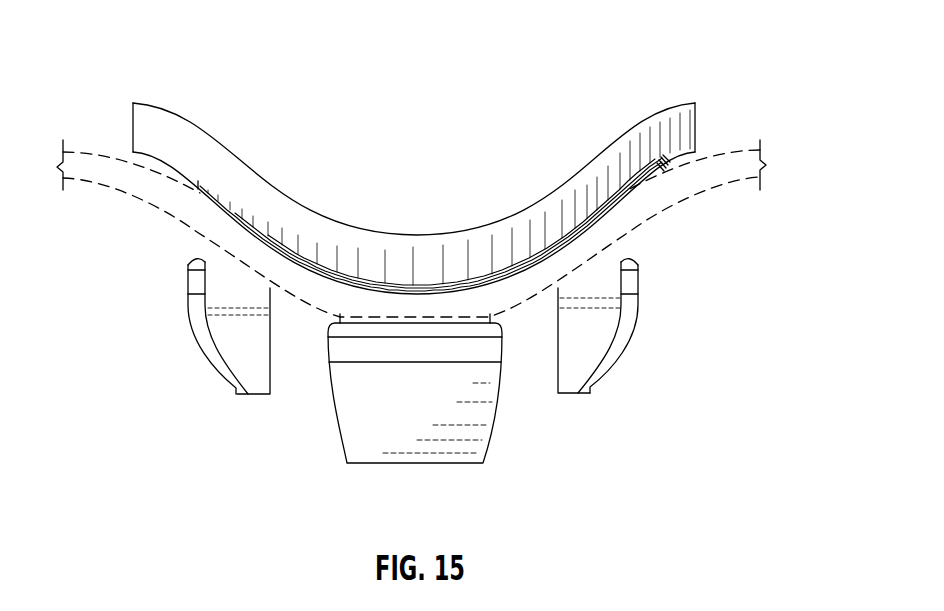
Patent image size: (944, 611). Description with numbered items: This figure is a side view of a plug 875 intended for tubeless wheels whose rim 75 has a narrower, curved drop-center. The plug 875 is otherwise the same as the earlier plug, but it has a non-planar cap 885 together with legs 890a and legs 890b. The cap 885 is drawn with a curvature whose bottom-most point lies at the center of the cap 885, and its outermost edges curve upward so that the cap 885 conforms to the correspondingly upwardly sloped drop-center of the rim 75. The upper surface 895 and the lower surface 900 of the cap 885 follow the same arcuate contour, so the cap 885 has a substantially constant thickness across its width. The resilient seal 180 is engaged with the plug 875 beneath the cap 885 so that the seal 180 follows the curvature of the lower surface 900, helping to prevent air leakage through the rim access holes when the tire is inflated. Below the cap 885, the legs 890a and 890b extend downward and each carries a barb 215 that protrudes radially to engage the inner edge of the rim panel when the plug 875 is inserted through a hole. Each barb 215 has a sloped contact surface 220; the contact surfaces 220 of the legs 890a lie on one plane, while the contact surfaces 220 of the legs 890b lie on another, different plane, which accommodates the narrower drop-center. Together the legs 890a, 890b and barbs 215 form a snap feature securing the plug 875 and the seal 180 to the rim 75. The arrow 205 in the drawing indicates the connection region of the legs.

The plug 875 is at (541, 63).
The non-planar cap 885 is at (170, 130).
The upper surface 895 is at (573, 178).
The lower surface 900 is at (663, 165).
The seal 180 is at (277, 252).
The rim 75 is at (719, 175).
The contact surface 220 is at (207, 258).
The barb 215 is at (228, 366).
The legs 890a is at (400, 464).
The legs 890b is at (254, 398).
The connection assembly 205 is at (299, 436).